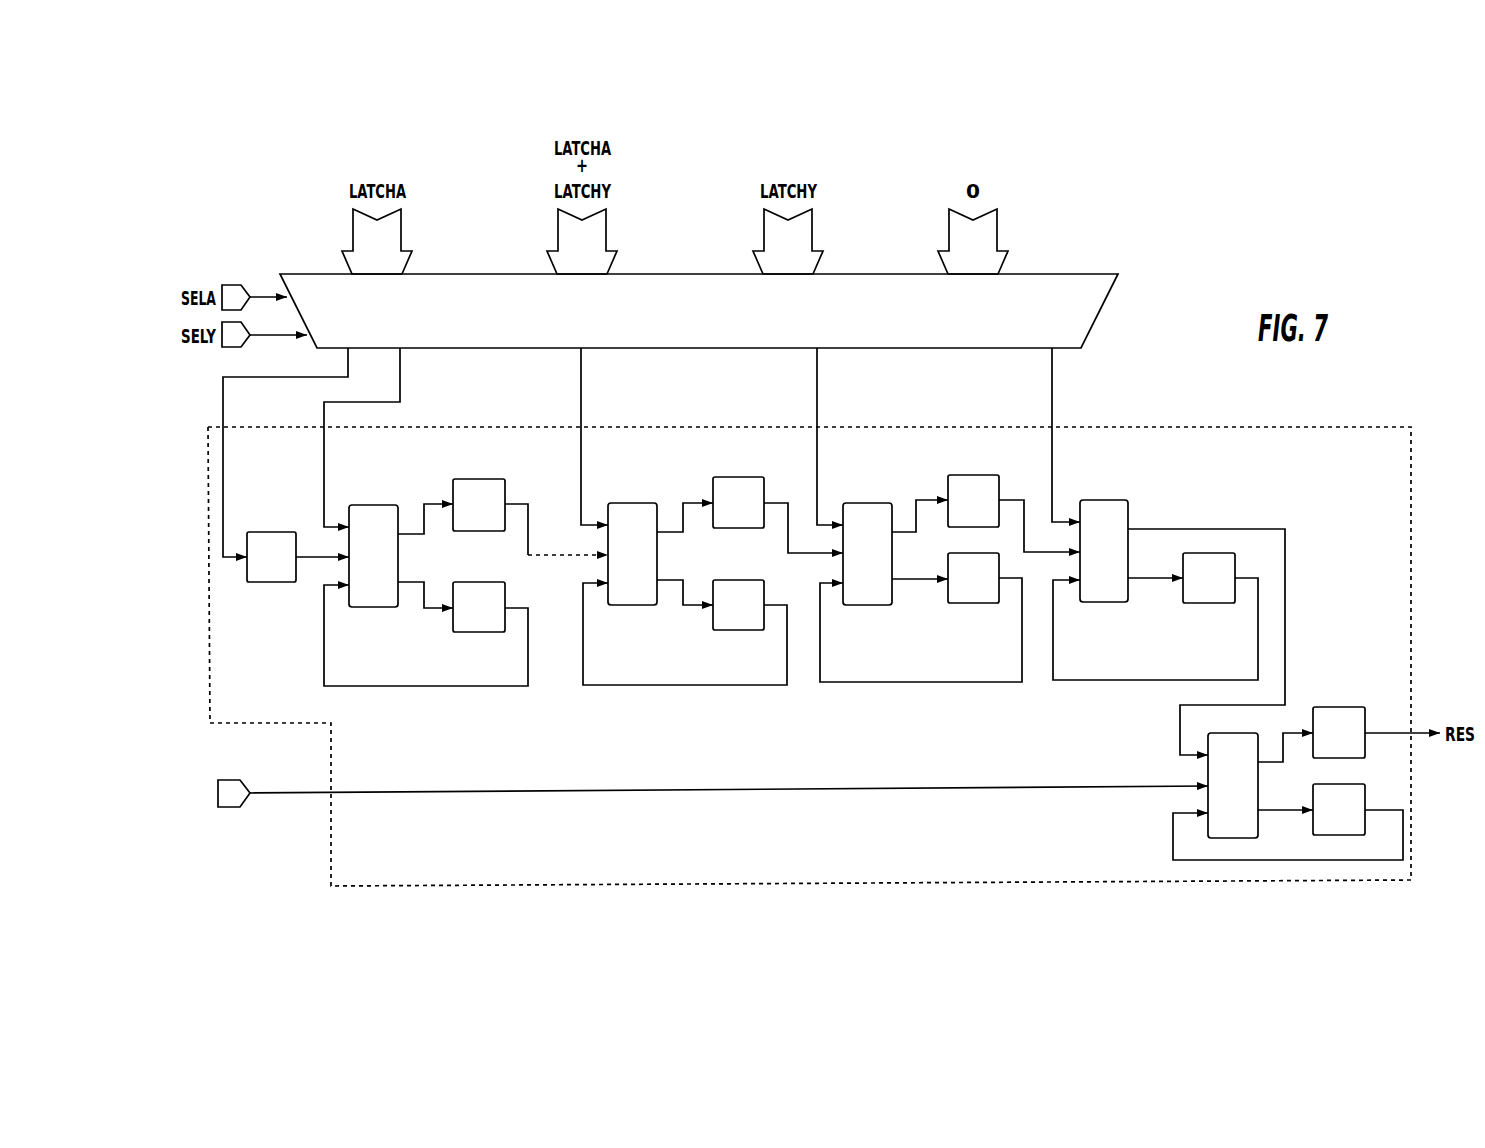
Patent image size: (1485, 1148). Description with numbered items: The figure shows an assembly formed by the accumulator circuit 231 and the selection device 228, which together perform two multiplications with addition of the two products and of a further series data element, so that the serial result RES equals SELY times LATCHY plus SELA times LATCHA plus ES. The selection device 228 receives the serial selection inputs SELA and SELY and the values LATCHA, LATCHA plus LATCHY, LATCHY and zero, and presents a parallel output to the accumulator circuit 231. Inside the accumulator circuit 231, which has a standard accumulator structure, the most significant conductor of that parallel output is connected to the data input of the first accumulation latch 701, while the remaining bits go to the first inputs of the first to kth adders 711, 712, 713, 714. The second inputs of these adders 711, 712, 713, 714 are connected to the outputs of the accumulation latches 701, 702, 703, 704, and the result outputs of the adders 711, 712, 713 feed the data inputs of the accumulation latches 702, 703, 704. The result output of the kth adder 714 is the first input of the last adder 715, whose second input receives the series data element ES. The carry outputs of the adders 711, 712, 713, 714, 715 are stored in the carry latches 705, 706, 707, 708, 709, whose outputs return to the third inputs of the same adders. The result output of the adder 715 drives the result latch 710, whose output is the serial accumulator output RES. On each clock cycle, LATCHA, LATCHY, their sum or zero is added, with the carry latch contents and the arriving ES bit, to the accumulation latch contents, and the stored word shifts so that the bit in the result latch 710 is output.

The selection device 228 is at (1103, 303).
The accumulator circuit 231 is at (683, 887).
The first accumulation latch 701 is at (272, 582).
The second accumulation latch 702 is at (478, 479).
The third accumulation latch 703 is at (737, 477).
The kth accumulation latch 704 is at (975, 475).
The first carry latch 705 is at (482, 632).
The second carry latch 706 is at (742, 630).
The third carry latch 707 is at (976, 603).
The kth carry latch 708 is at (1211, 603).
The (k+1)th carry latch 709 is at (1365, 790).
The result latch 710 is at (1338, 707).
The first adder 711 is at (375, 505).
The second adder 712 is at (636, 503).
The third adder 713 is at (872, 503).
The kth adder 714 is at (1108, 500).
The (k+1)th adder 715 is at (1259, 789).